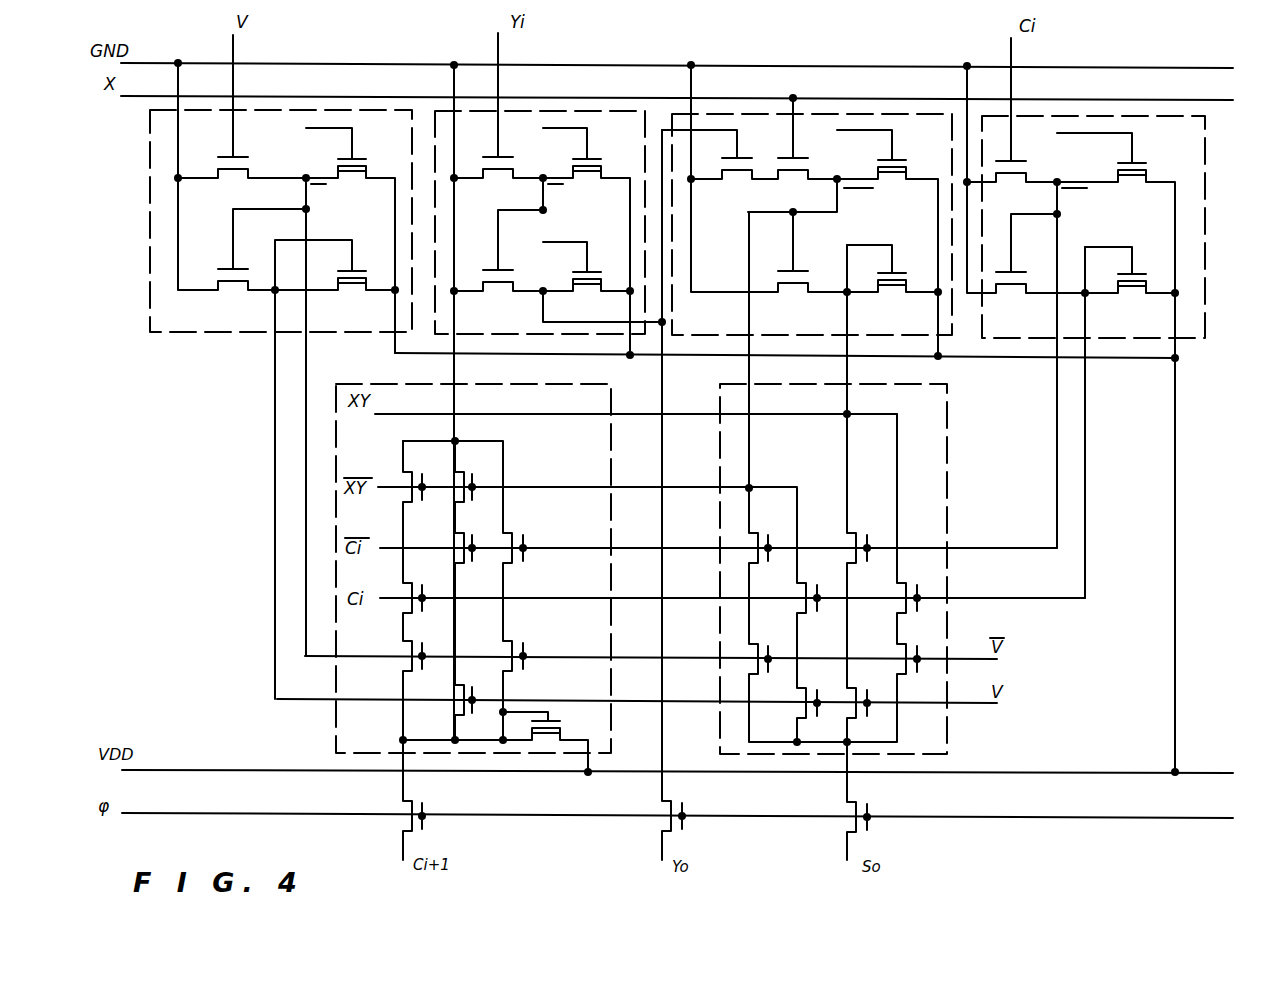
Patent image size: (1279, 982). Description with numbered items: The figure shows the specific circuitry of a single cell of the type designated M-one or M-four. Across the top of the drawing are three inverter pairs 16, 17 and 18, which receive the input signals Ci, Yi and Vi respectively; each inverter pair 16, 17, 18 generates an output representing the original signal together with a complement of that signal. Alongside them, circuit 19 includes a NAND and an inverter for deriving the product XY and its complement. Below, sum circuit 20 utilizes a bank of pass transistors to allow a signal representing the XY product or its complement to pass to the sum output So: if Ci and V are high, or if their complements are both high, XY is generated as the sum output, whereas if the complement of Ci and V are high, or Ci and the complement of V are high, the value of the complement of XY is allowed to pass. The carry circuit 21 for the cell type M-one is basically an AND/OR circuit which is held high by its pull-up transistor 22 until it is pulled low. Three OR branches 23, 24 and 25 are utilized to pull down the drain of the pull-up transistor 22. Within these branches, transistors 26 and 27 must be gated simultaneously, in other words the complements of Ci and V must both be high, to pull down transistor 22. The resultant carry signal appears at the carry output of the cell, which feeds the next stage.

The inverter pair 16 is at (1207, 178).
The inverter pair 17 is at (578, 110).
The inverter pair 18 is at (150, 305).
The circuit 19 is at (877, 112).
The sum circuit 20 is at (948, 742).
The carry circuit 21 is at (334, 730).
The pull-up transistor 22 is at (560, 731).
The OR branch 23 is at (507, 453).
The OR branch 24 is at (457, 455).
The OR branch 25 is at (402, 452).
The transistor 26 is at (513, 563).
The transistor 27 is at (513, 672).